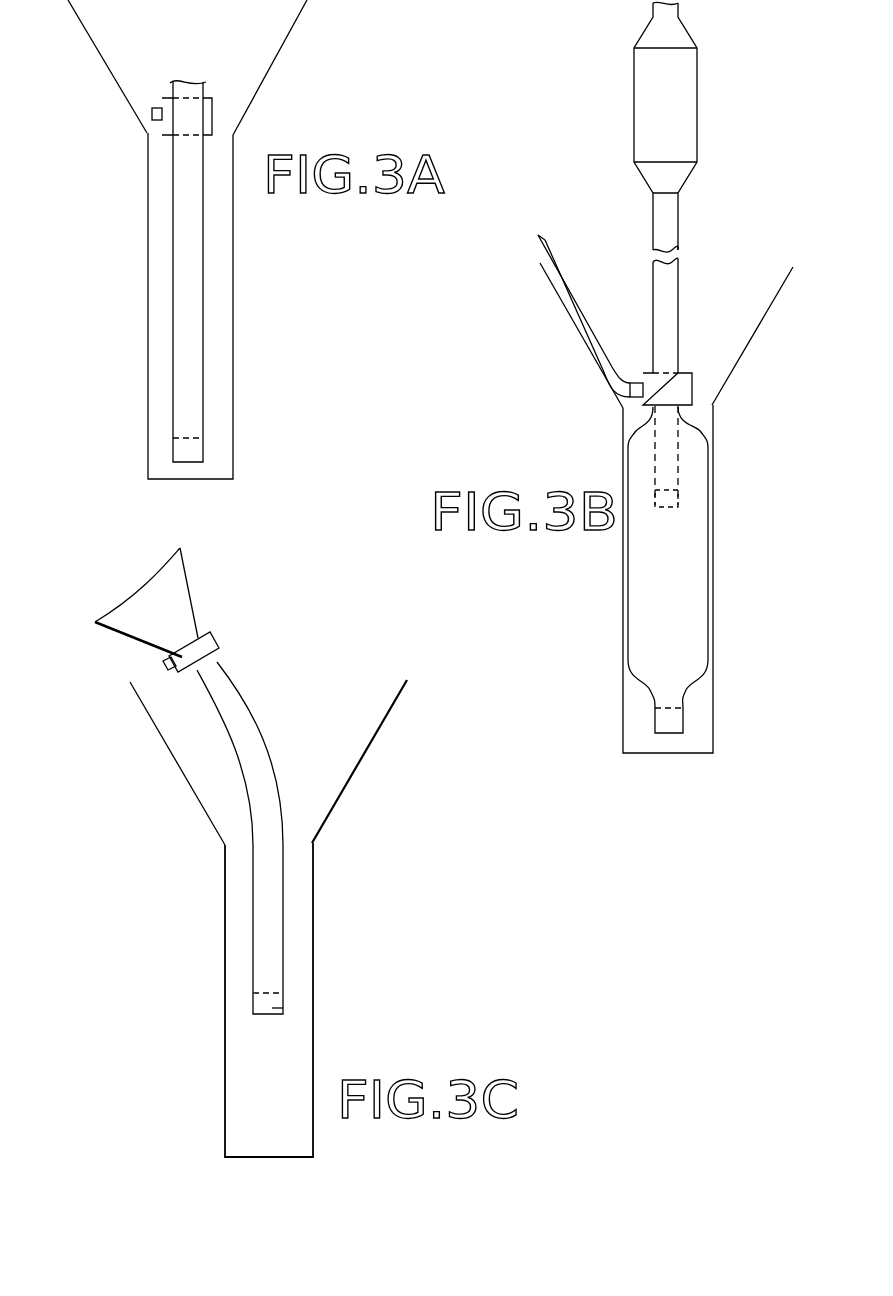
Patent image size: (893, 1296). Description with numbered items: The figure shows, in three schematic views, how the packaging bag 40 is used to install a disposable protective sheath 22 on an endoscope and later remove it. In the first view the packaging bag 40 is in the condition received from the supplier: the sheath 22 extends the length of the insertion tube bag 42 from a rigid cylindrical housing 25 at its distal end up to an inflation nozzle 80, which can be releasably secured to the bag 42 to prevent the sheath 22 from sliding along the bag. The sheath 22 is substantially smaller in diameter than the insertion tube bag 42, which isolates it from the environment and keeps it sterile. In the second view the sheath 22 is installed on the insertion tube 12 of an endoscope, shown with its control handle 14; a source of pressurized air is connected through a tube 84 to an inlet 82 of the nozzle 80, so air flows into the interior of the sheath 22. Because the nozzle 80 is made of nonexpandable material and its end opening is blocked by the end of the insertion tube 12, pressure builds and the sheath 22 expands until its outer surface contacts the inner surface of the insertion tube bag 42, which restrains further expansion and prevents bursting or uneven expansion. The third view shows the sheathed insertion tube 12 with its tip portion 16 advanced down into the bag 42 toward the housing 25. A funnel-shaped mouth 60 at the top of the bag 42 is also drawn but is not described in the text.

In FIG. 3B, the insertion tube 12 is at (679, 308).
In FIG. 3C, the insertion tube 12 is at (278, 900).
In FIG. 3B, the control handle 14 is at (690, 112).
In FIG. 3C, the control handle 14 is at (198, 607).
In FIG. 3B, the tip portion 16 is at (683, 507).
In FIG. 3C, the tip portion 16 is at (272, 1008).
In FIG. 3A, the sheath 22 is at (173, 274).
In FIG. 3B, the sheath 22 is at (710, 617).
In FIG. 3C, the sheath 22 is at (283, 930).
In FIG. 3A, the cylindrical housing 25 is at (200, 450).
In FIG. 3B, the cylindrical housing 25 is at (683, 720).
In FIG. 3C, the cylindrical housing 25 is at (283, 1000).
In FIG. 3A, the packaging bag 40 is at (100, 96).
In FIG. 3A, the insertion tube bag 42 is at (233, 300).
In FIG. 3B, the insertion tube bag 42 is at (713, 595).
In FIG. 3C, the insertion tube bag 42 is at (313, 866).
In FIG. 3A, the funnel 60 is at (282, 45).
In FIG. 3B, the funnel 60 is at (745, 345).
In FIG. 3C, the funnel 60 is at (370, 745).
In FIG. 3A, the inflation nozzle 80 is at (212, 112).
In FIG. 3B, the inflation nozzle 80 is at (694, 372).
In FIG. 3C, the inflation nozzle 80 is at (218, 640).
In FIG. 3B, the inlet 82 is at (637, 378).
In FIG. 3C, the inlet 82 is at (166, 664).
In FIG. 3B, the tube 84 is at (558, 243).